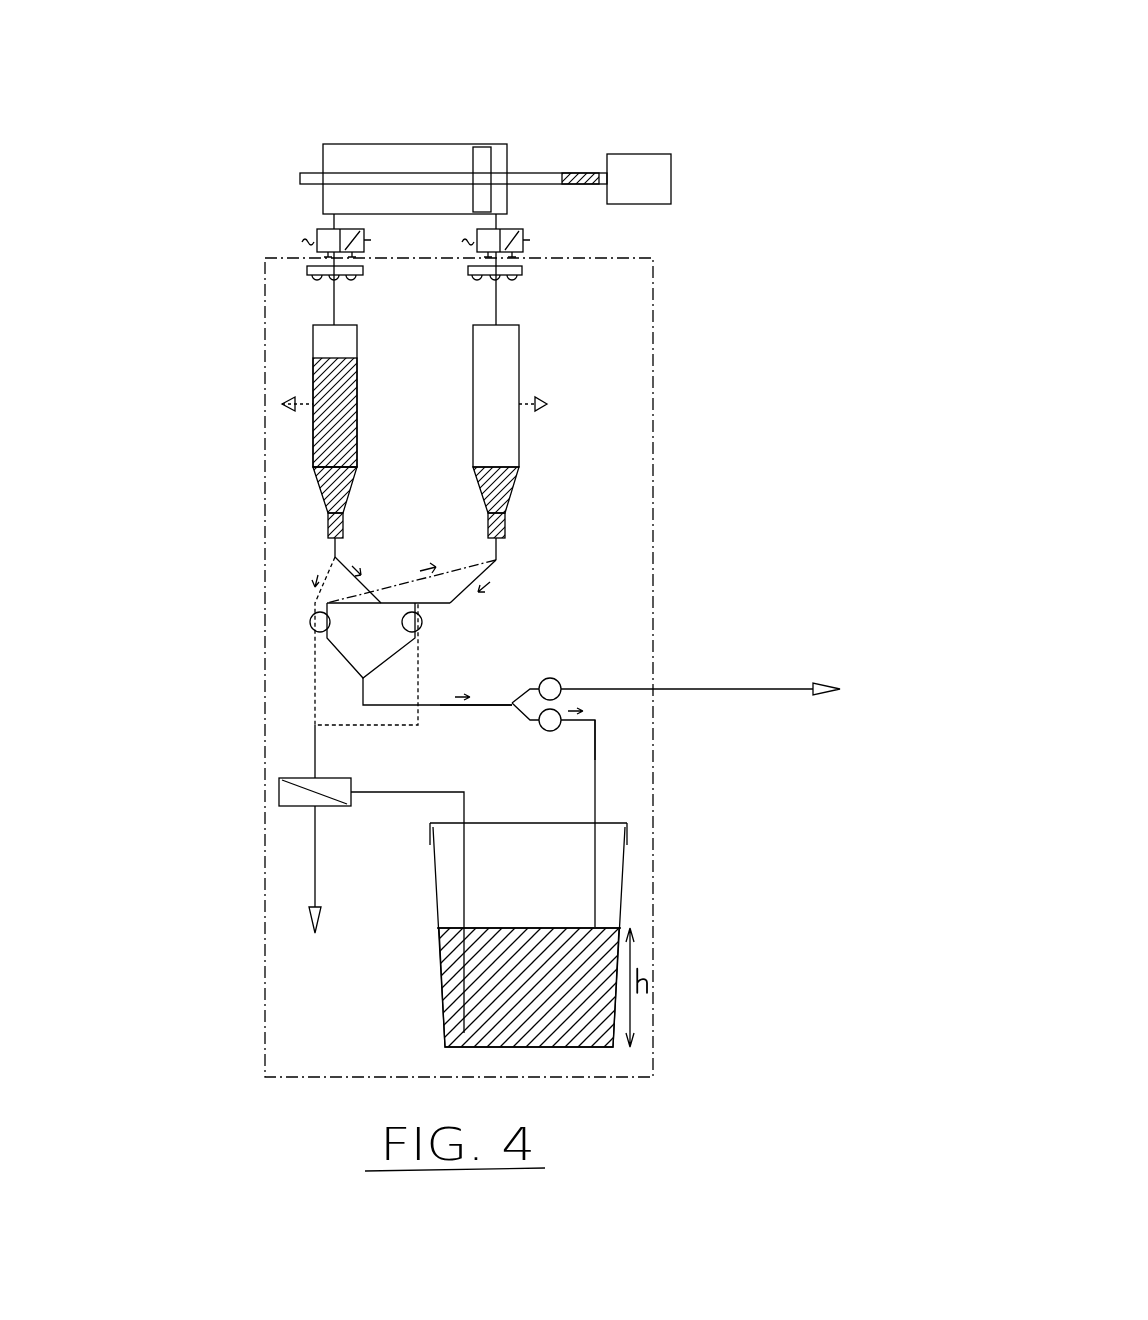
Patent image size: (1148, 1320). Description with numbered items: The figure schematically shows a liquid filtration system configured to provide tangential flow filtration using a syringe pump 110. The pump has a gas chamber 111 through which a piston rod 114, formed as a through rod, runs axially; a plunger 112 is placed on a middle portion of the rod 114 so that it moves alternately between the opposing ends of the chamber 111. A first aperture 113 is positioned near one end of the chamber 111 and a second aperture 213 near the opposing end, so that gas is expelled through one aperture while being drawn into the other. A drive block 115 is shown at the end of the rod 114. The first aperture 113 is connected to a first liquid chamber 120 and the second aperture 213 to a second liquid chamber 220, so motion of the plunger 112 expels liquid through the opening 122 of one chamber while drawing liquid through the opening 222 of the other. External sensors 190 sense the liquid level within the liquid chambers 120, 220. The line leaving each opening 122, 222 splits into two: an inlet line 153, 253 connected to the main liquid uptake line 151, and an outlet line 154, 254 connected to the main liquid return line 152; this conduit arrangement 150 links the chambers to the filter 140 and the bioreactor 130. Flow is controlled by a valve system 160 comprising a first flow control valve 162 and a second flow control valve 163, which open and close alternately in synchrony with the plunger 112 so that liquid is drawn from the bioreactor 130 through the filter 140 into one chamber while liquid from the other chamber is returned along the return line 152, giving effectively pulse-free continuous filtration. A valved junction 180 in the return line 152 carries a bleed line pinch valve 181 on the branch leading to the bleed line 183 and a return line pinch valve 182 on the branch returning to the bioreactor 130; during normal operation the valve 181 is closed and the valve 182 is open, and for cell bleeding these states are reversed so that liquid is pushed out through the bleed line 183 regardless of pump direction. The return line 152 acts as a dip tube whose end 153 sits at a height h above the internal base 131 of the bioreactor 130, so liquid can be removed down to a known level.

The syringe pump 110 is at (588, 78).
The gas chamber 111 is at (334, 153).
The plunger 112 is at (480, 165).
The first aperture 113 is at (330, 213).
The piston rod 114 is at (380, 178).
The drive motor 115 is at (657, 175).
The first liquid chamber 120 is at (195, 398).
The opening 122 is at (333, 542).
The bioreactor 130 is at (353, 1043).
The internal base of the bioreactor 131 is at (622, 1115).
The filter 140 is at (198, 882).
The conduit system 150 is at (425, 768).
The main liquid uptake line 151 is at (190, 738).
The main liquid return line 152 is at (597, 782).
The inlet line 153 is at (597, 926).
The outlet line 154 is at (345, 567).
The valve system 160 is at (388, 641).
The first flow control valve 162 is at (307, 637).
The second flow control valve 163 is at (425, 628).
The outlet junction 180 is at (712, 548).
The bleed line pinch valve 181 is at (560, 678).
The return line pinch valve 182 is at (548, 733).
The bleed line 183 is at (800, 640).
The sensor 190 is at (553, 413).
The second aperture 213 is at (505, 211).
The second liquid chamber 220 is at (565, 338).
The opening 222 is at (500, 545).
The inlet line 253 is at (467, 592).
The outlet line 254 is at (453, 568).